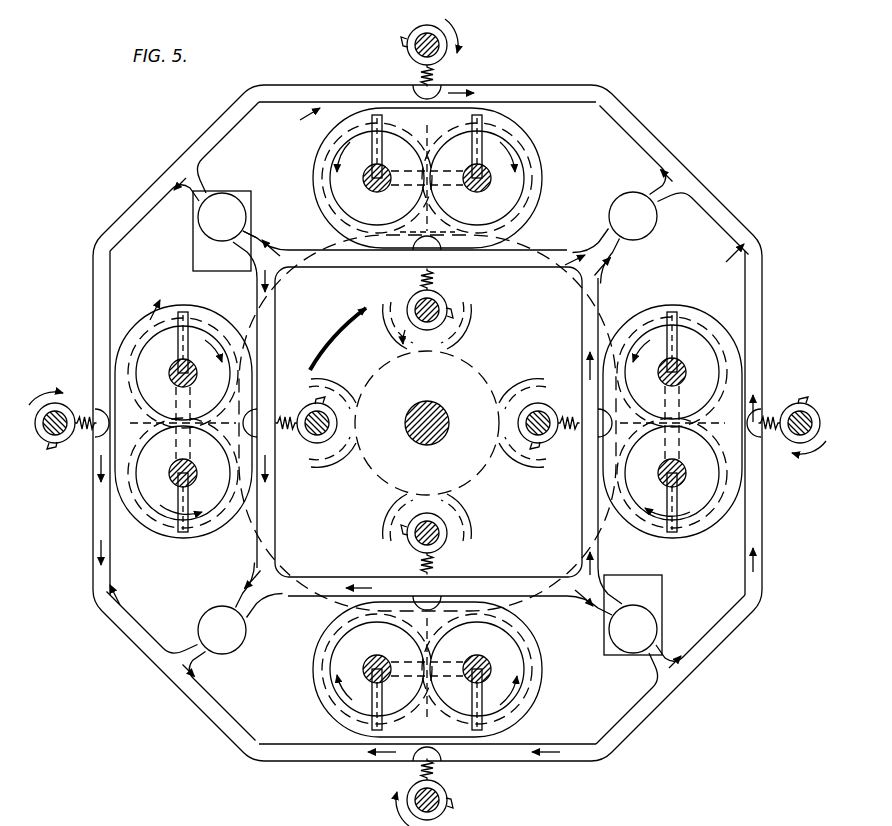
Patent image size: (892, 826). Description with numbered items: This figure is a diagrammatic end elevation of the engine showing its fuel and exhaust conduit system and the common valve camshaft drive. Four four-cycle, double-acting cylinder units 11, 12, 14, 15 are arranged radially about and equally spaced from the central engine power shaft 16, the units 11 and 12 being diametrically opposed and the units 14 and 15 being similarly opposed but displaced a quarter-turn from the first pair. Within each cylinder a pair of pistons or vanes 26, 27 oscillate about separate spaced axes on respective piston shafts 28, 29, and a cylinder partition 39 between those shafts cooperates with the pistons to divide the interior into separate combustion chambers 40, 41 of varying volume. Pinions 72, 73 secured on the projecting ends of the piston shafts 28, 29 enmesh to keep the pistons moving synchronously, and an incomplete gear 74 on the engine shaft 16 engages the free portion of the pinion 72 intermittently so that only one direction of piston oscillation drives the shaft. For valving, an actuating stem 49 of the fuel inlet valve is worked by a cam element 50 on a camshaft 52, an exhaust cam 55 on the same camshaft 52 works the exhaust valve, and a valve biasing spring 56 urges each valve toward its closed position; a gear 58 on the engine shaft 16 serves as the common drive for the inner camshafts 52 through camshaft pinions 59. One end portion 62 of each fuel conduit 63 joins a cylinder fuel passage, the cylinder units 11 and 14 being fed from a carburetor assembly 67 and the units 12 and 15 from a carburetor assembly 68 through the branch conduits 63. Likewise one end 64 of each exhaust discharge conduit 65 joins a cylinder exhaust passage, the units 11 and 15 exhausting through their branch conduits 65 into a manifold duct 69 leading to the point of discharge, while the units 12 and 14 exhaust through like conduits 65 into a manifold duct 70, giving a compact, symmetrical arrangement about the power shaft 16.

The cylinder unit 11 is at (312, 178).
The cylinder unit 12 is at (542, 682).
The cylinder unit 14 is at (208, 538).
The cylinder unit 15 is at (712, 535).
The central engine power shaft 16 is at (424, 412).
The piston 26 is at (382, 124).
The piston 27 is at (482, 145).
The piston shaft 28 is at (368, 172).
The piston shaft 29 is at (483, 186).
The cylinder partition 39 is at (440, 188).
The combustion chamber 40 is at (418, 168).
The combustion chamber 41 is at (412, 192).
The actuating stem 49 is at (418, 74).
The cam element 50 is at (445, 34).
The camshaft 52 is at (415, 45).
The exhaust cam 55 is at (402, 38).
The valve biasing spring 56 is at (462, 66).
The gear 58 is at (478, 370).
The pinion 59 is at (427, 552).
The end portion of fuel conduit 62 is at (443, 90).
The fuel conduit 63 is at (252, 106).
The end of exhaust discharge conduit 64 is at (400, 228).
The exhaust discharge conduit 65 is at (478, 276).
The carburetor assembly 67 is at (198, 248).
The carburetor assembly 68 is at (614, 660).
The manifold duct 69 is at (658, 210).
The manifold duct 70 is at (247, 640).
The pinion 72 is at (432, 156).
The pinion 73 is at (470, 134).
The gear 74 is at (420, 220).